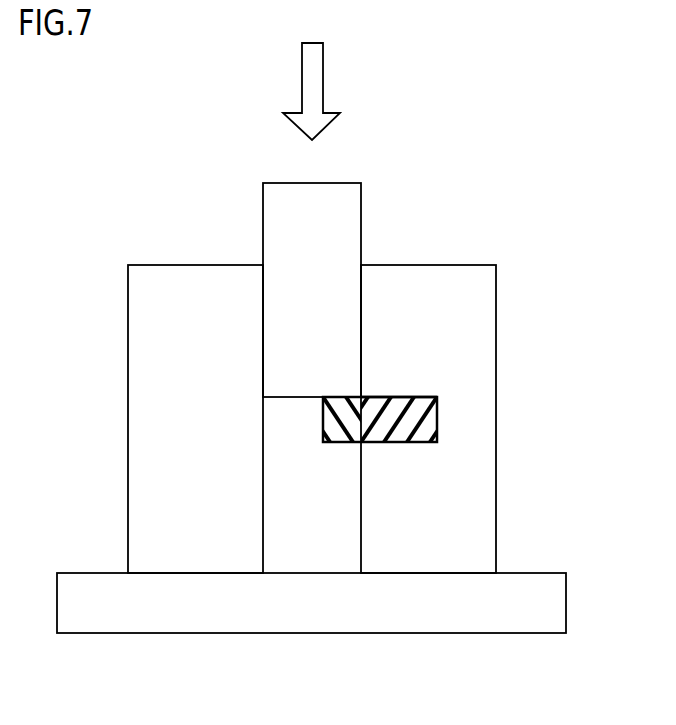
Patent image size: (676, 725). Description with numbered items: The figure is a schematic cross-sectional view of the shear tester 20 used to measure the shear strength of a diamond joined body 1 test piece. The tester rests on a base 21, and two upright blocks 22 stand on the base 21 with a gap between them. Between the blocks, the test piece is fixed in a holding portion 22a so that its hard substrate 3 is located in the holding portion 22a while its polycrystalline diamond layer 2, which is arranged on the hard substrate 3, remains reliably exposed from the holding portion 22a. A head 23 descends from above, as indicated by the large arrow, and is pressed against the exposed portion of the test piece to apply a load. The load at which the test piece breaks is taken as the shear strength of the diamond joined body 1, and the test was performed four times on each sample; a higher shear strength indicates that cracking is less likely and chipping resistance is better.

The diamond joined body 1 is at (440, 450).
The polycrystalline diamond layer 2 is at (343, 435).
The hard substrate 3 is at (398, 433).
The shear tester 20 is at (472, 238).
The base 21 is at (470, 618).
The die 22 is at (140, 527).
The holding portion 22a is at (424, 397).
The head 23 is at (329, 193).